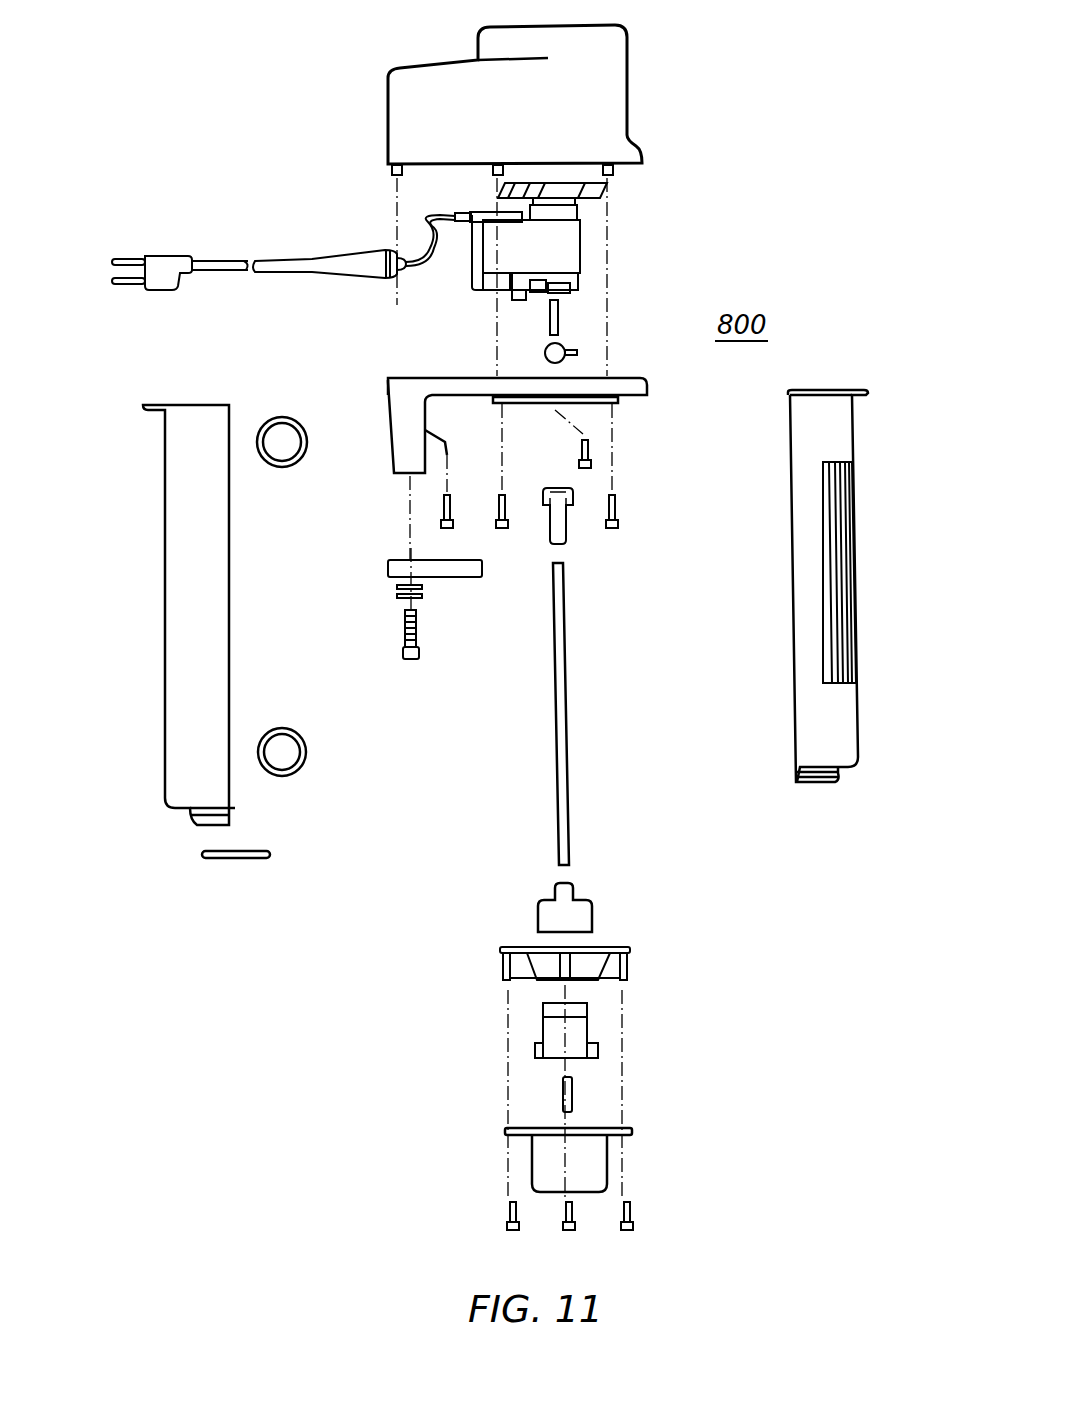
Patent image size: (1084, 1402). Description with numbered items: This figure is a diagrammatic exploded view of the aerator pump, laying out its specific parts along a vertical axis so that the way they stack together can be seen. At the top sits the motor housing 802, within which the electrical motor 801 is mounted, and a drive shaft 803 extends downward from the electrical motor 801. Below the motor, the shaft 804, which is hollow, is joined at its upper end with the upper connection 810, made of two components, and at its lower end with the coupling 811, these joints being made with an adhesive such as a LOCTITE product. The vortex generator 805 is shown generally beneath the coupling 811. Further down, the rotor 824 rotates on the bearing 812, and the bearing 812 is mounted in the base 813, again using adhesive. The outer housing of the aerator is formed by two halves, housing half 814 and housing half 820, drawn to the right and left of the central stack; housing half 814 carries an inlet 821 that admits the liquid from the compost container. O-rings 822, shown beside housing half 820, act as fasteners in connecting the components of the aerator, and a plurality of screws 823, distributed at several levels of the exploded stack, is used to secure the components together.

The electrical motor 801 is at (578, 236).
The motor housing 802 is at (630, 87).
The drive shaft 803 is at (558, 322).
The shaft 804 is at (560, 725).
The vortex generator 805 is at (662, 967).
The upper connection 810 is at (568, 358).
The coupling 811 is at (595, 915).
The bearing 812 is at (575, 1088).
The base 813 is at (598, 1172).
The housing half 814 is at (848, 722).
The housing half 820 is at (183, 615).
The inlet 821 is at (855, 553).
The o-rings 822 is at (290, 417).
The screws 823 is at (590, 445).
The rotor 824 is at (580, 1027).